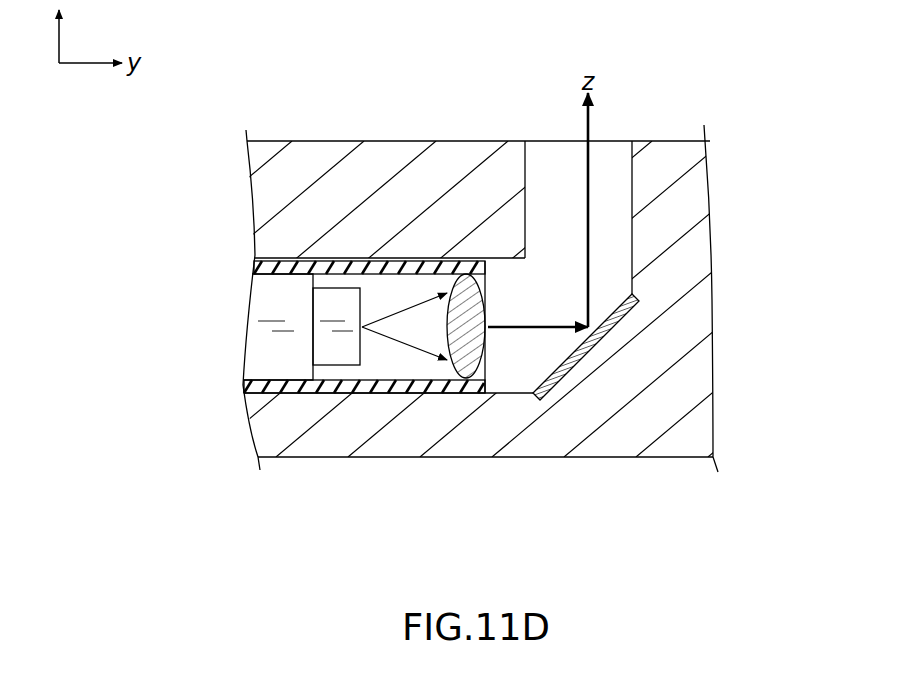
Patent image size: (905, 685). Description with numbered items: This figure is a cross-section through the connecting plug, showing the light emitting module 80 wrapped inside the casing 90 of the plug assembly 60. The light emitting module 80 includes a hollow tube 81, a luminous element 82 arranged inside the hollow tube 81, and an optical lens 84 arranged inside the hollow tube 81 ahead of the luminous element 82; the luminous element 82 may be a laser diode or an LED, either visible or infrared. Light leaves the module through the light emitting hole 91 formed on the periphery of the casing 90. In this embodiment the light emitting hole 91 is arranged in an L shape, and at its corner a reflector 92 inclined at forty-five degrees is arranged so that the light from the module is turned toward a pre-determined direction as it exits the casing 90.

The housing / scanner head 60 is at (246, 238).
The light emitting module 80 is at (364, 412).
The hollow tube 81 is at (353, 383).
The luminous element 82 is at (460, 365).
The optical lens 84 is at (270, 363).
The casing 90 is at (680, 385).
The light emitting hole 91 is at (615, 250).
The reflector 92 is at (570, 367).